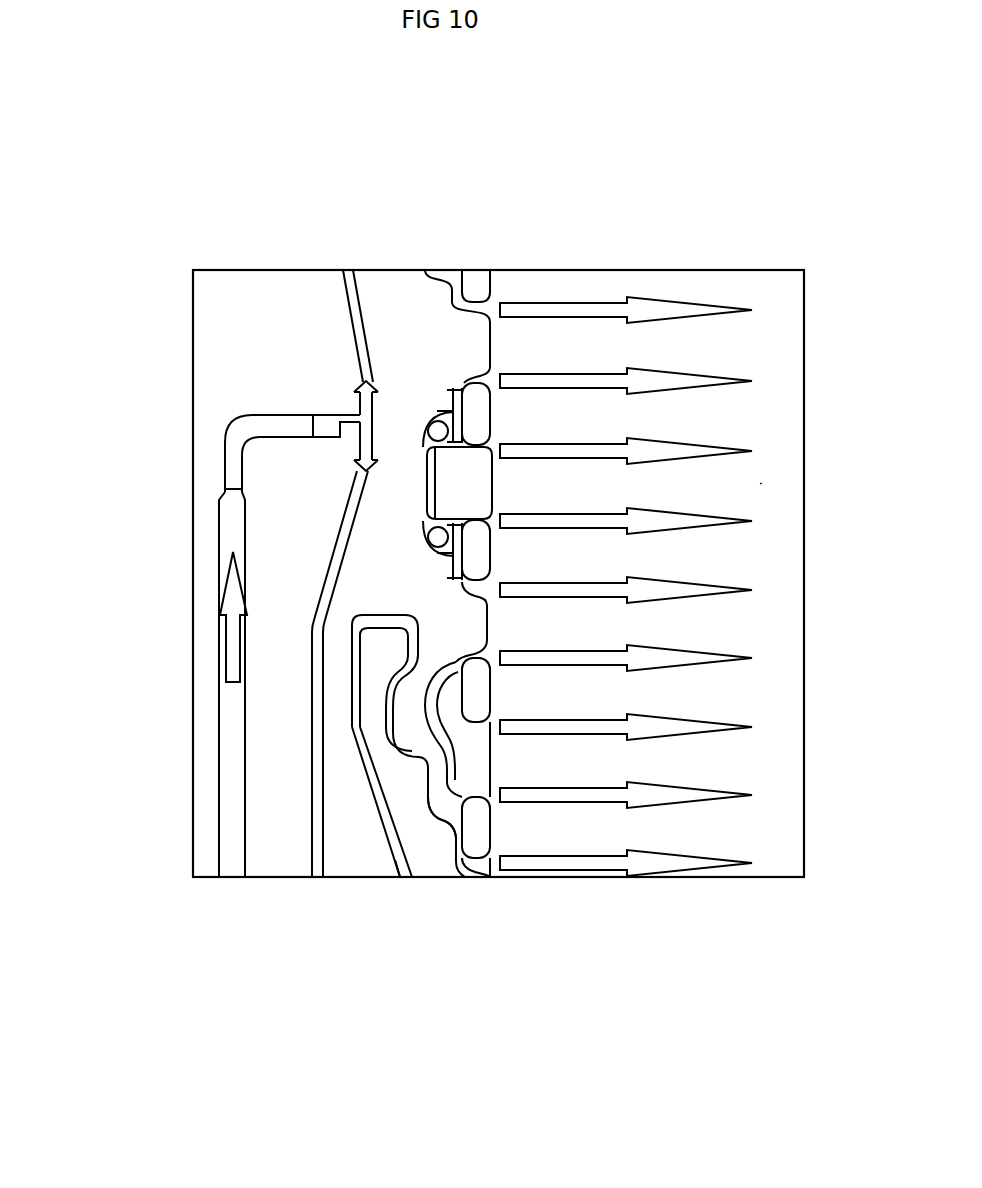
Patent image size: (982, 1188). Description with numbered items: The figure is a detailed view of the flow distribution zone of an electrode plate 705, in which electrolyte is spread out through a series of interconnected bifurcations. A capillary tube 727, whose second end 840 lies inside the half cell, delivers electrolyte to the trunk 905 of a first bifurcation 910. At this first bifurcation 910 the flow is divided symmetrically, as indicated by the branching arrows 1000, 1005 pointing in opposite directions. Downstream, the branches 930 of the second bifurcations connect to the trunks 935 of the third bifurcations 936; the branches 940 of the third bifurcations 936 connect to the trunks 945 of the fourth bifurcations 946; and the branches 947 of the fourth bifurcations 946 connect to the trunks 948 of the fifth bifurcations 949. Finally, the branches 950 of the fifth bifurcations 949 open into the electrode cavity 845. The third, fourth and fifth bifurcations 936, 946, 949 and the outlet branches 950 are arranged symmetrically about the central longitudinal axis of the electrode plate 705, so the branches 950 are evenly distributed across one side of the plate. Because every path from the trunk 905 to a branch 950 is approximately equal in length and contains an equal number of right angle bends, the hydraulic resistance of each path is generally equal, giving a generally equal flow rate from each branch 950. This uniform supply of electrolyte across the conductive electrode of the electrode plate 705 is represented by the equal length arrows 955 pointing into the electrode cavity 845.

The electrode plate 705 is at (186, 257).
The trunk of the first bifurcation 905 is at (327, 428).
The branching arrow 1005 is at (366, 380).
The first bifurcation 910 is at (376, 388).
The second end of capillary tube 840 is at (230, 516).
The branching arrow 1000 is at (356, 467).
The capillary tube 727 is at (217, 682).
The electrode cavity 845 is at (762, 483).
The trunks of third bifurcations 935 is at (353, 628).
The third bifurcations 936 is at (403, 622).
The branches of second bifurcations 930 is at (395, 735).
The branches of third bifurcations 940 is at (418, 775).
The trunks of fourth bifurcations 945 is at (413, 770).
The fourth bifurcations 946 is at (419, 757).
The branches of fourth bifurcations 947 is at (395, 842).
The trunks of fifth bifurcations 948 is at (433, 830).
The fifth bifurcations 949 is at (452, 840).
The branches of fifth bifurcations 950 is at (478, 870).
The equal length arrows 955 is at (593, 863).